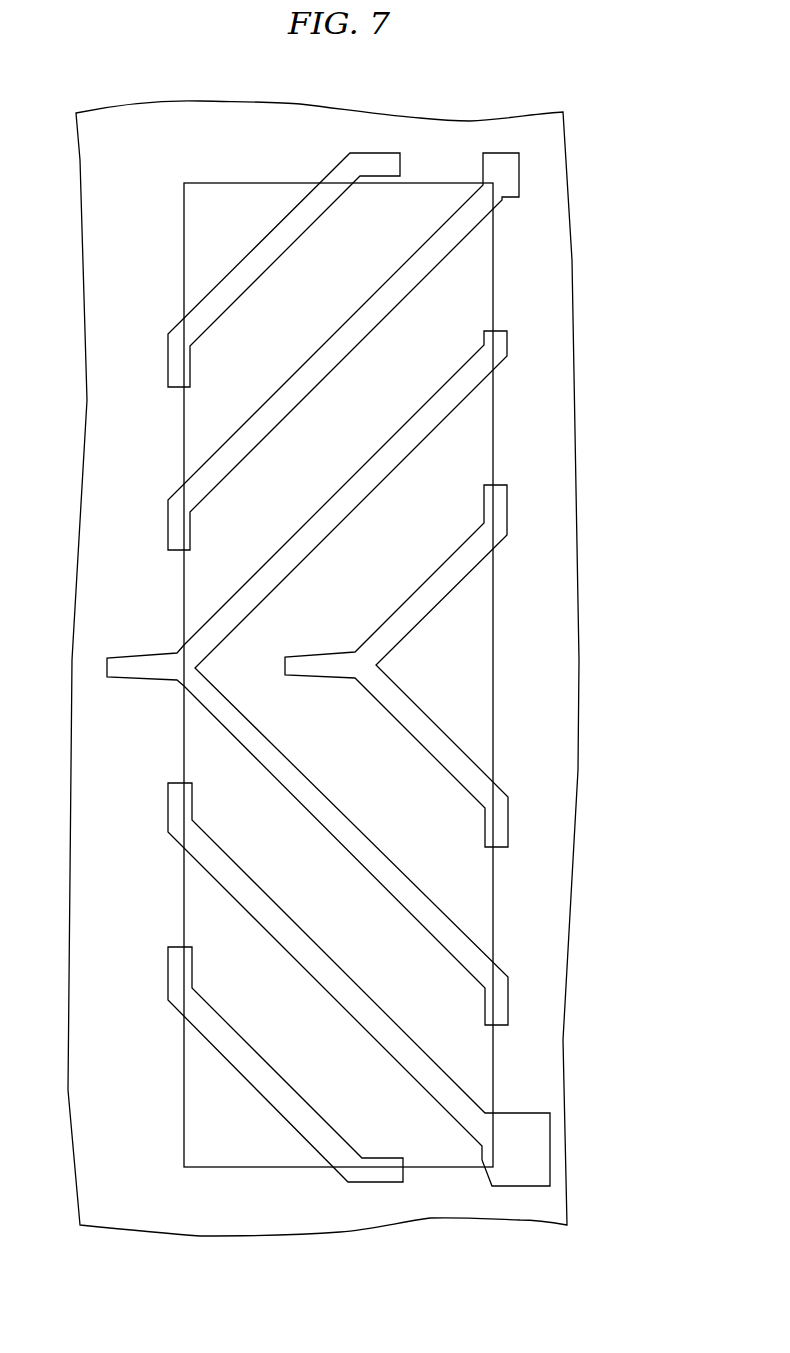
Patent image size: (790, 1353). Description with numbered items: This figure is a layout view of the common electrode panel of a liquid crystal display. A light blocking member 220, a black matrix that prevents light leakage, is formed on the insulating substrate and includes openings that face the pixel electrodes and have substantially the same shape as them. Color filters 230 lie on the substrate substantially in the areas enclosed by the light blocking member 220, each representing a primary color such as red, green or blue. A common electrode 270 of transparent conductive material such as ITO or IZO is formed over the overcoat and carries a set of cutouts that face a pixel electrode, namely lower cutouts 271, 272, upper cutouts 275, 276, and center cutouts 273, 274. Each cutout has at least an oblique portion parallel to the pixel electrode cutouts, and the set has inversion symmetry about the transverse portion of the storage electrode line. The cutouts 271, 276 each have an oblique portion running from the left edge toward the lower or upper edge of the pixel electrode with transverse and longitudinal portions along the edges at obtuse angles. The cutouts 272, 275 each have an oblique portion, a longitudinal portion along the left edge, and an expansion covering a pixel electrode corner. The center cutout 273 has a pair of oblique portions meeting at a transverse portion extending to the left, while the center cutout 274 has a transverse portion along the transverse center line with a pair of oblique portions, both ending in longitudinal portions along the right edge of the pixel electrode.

The light blocking member 220 is at (493, 657).
The color filter 230 is at (573, 240).
The common electrode 270 is at (374, 671).
The lower cutout 271 is at (285, 1116).
The lower cutout 272 is at (359, 1020).
The center cutout 273 is at (374, 678).
The center cutout 274 is at (466, 752).
The upper cutout 275 is at (343, 308).
The upper cutout 276 is at (284, 224).